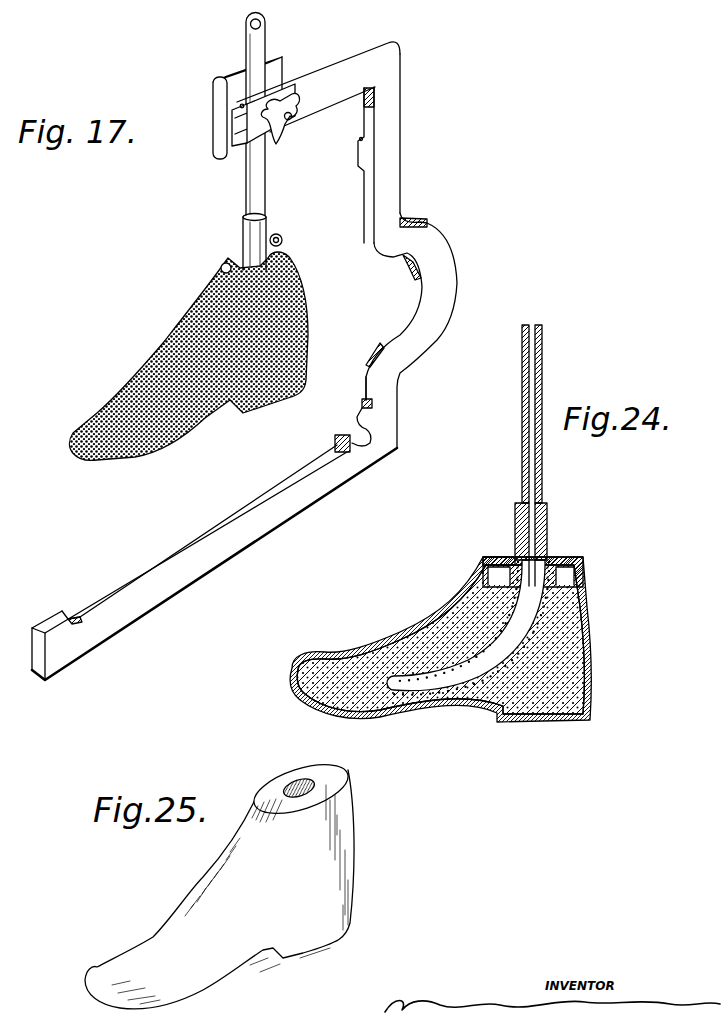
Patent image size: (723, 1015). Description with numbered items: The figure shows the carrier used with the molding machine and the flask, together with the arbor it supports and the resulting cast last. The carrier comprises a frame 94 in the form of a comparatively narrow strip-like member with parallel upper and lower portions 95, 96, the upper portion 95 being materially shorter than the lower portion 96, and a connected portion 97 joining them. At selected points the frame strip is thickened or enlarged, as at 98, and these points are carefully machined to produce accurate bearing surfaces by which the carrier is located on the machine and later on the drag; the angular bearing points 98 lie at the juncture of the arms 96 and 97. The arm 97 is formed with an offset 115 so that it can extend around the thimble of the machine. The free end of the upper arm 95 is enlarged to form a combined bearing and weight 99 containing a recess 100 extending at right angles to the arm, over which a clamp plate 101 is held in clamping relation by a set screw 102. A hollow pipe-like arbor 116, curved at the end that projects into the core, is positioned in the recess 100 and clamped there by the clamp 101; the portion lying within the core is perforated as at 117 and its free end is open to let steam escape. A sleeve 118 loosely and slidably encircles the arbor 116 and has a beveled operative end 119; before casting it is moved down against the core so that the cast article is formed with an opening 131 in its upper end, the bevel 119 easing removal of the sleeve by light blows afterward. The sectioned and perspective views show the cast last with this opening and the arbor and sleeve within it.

In FIG. 17, the frame 94 is at (397, 448).
In FIG. 17, the upper portion (arm) of the frame 95 is at (338, 83).
In FIG. 17, the lower portion (arm) of the frame 96 is at (250, 522).
In FIG. 17, the connected portion (arm) of the frame 97 is at (390, 162).
In FIG. 17, the thickened bearing points 98 is at (359, 152).
In FIG. 17, the combined bearing and weight 99 is at (214, 97).
In FIG. 17, the recess 100 is at (246, 86).
In FIG. 17, the clamp plate 101 is at (268, 128).
In FIG. 17, the set screw 102 is at (281, 104).
In FIG. 17, the offset 115 is at (440, 263).
In FIG. 17, the arbor 116 is at (252, 188).
In FIG. 24, the arbor 116 is at (521, 423).
In FIG. 24, the perforations 117 is at (520, 627).
In FIG. 17, the sleeve 118 is at (257, 235).
In FIG. 24, the sleeve 118 is at (547, 510).
In FIG. 24, the beveled end 119 is at (512, 558).
In FIG. 24, the opening 131 is at (557, 558).
In FIG. 25, the opening 131 is at (293, 782).